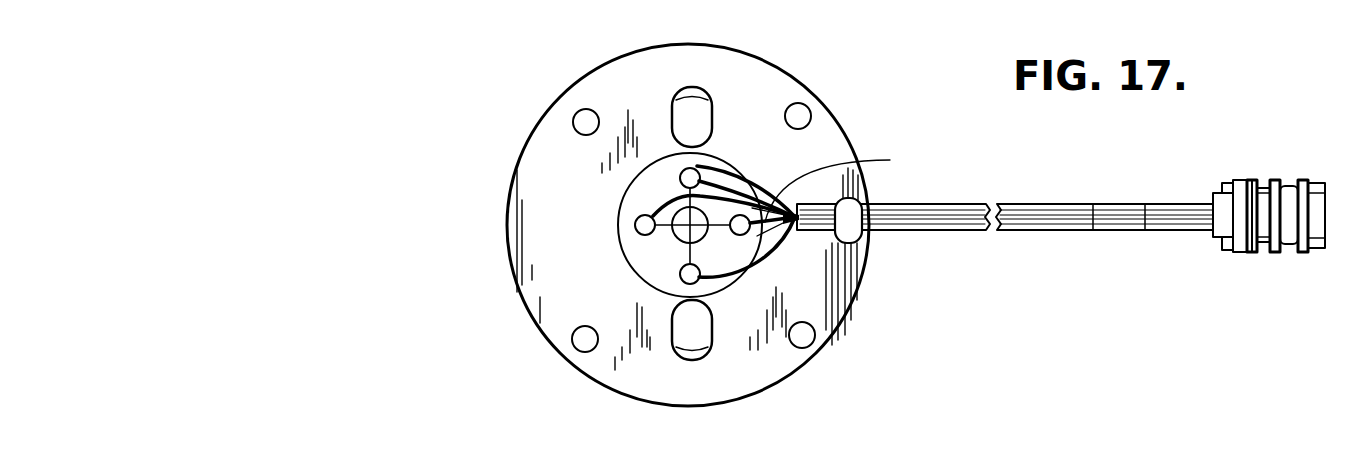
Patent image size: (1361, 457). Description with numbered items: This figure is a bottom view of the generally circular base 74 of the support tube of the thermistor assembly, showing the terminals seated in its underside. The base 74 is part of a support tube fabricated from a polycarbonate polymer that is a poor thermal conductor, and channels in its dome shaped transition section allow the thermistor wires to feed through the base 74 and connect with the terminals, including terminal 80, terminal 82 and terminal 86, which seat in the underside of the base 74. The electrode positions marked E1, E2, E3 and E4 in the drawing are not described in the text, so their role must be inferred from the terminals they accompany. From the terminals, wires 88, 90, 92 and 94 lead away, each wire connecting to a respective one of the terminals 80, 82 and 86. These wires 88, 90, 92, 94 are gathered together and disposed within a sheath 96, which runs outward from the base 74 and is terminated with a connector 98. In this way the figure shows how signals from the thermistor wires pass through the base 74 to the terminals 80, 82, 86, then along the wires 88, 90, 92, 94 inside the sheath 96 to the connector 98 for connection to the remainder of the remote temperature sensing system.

The base 74 is at (819, 100).
The terminal 80 is at (619, 238).
The terminal 82 is at (684, 282).
The terminal 86 is at (684, 172).
The wire 88 is at (637, 217).
The wire 90 is at (734, 272).
The wire 92 is at (890, 160).
The wire 94 is at (735, 173).
The sheath 96 is at (976, 205).
The connector 98 is at (1303, 180).
The electrode E1 is at (699, 160).
The electrode E2 is at (733, 236).
The electrode E3 is at (677, 278).
The electrode E4 is at (630, 213).